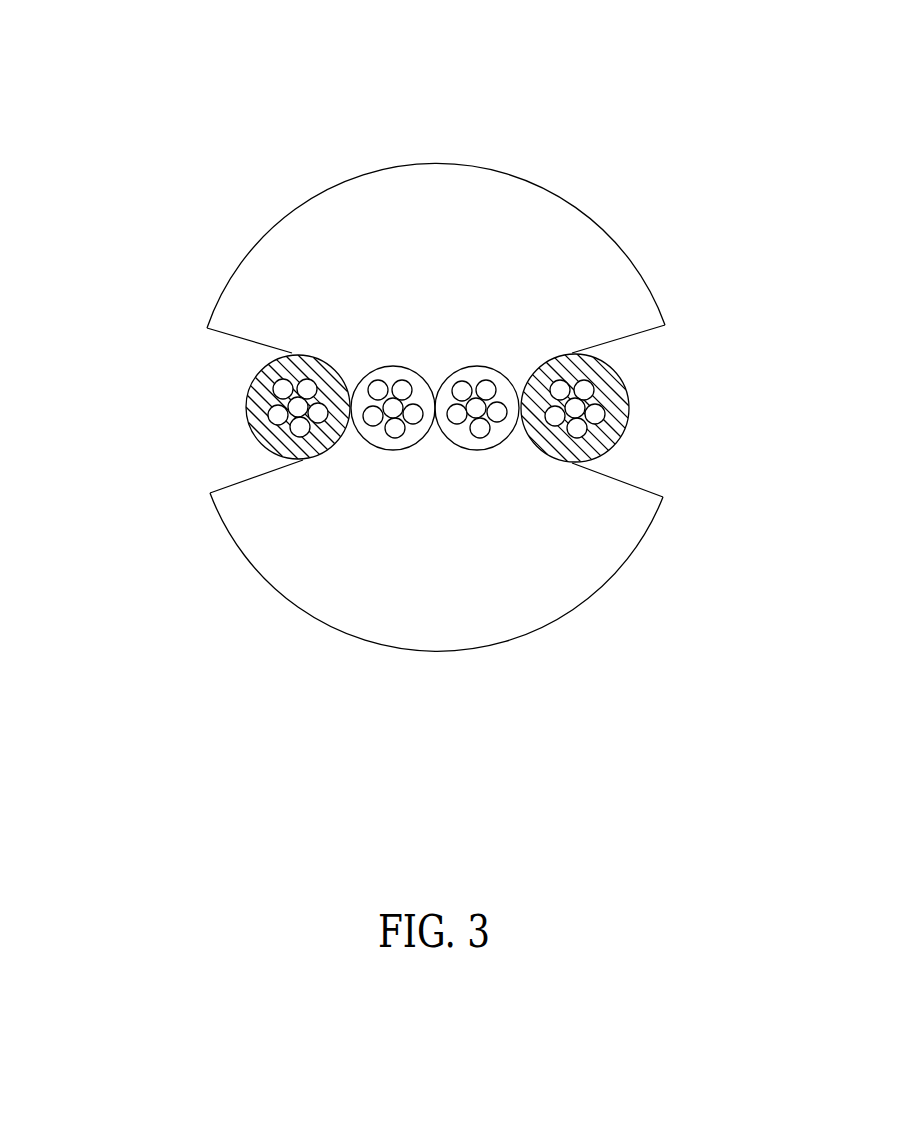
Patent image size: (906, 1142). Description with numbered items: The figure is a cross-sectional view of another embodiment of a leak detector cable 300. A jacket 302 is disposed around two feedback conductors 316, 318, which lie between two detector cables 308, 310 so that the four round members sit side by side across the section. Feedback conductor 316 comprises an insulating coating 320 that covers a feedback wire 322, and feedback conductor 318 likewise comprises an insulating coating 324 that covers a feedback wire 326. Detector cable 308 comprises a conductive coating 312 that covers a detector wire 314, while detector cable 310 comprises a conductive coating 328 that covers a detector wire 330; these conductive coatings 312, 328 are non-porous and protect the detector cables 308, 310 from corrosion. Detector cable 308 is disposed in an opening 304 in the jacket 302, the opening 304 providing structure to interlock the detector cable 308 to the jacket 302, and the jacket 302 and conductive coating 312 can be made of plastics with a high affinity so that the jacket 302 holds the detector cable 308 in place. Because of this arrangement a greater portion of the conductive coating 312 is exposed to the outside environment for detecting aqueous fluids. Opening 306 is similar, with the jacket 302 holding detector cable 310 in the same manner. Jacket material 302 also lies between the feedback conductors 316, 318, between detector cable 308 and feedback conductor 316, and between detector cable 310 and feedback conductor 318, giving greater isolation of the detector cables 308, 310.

The leak detector cable 300 is at (317, 92).
The jacket 302 is at (463, 164).
The opening 304 is at (655, 418).
The opening 306 is at (210, 407).
The detector cable 308 is at (628, 378).
The detector cable 310 is at (250, 373).
The conductive coating 312 is at (585, 418).
The detector wire 314 is at (572, 450).
The feedback conductor 316 is at (479, 360).
The feedback conductor 318 is at (385, 358).
The insulating coating 320 is at (475, 445).
The feedback wire 322 is at (455, 423).
The insulating coating 324 is at (395, 443).
The feedback wire 326 is at (378, 430).
The conductive coating 328 is at (265, 447).
The detector wire 330 is at (284, 392).